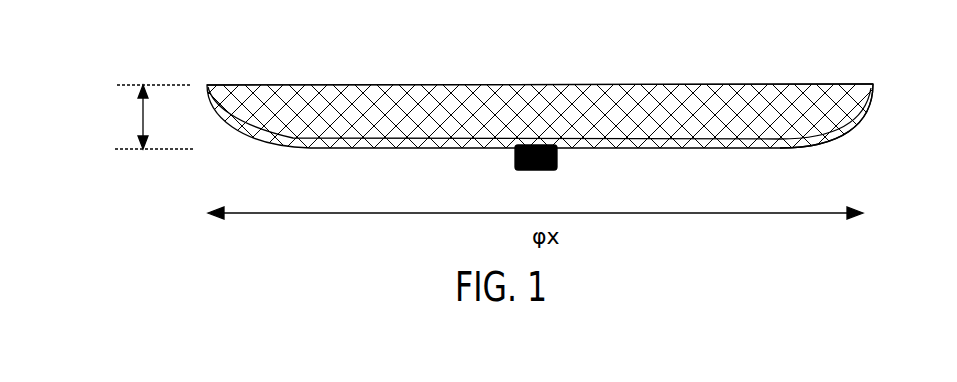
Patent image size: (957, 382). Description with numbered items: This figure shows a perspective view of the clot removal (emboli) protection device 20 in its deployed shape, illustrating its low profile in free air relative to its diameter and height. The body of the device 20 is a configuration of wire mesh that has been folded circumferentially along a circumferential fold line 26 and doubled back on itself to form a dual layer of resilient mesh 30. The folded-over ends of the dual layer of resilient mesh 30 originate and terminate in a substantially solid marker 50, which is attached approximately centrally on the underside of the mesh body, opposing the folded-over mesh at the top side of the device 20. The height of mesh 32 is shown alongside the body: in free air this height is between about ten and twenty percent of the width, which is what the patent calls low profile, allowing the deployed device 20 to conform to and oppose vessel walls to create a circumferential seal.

The device in deployed shape 20 is at (268, 140).
The circumferential fold line 26 is at (387, 85).
The dual layer resilient mesh 30 is at (872, 124).
The height of mesh 32 is at (138, 117).
The marker 50 is at (559, 167).